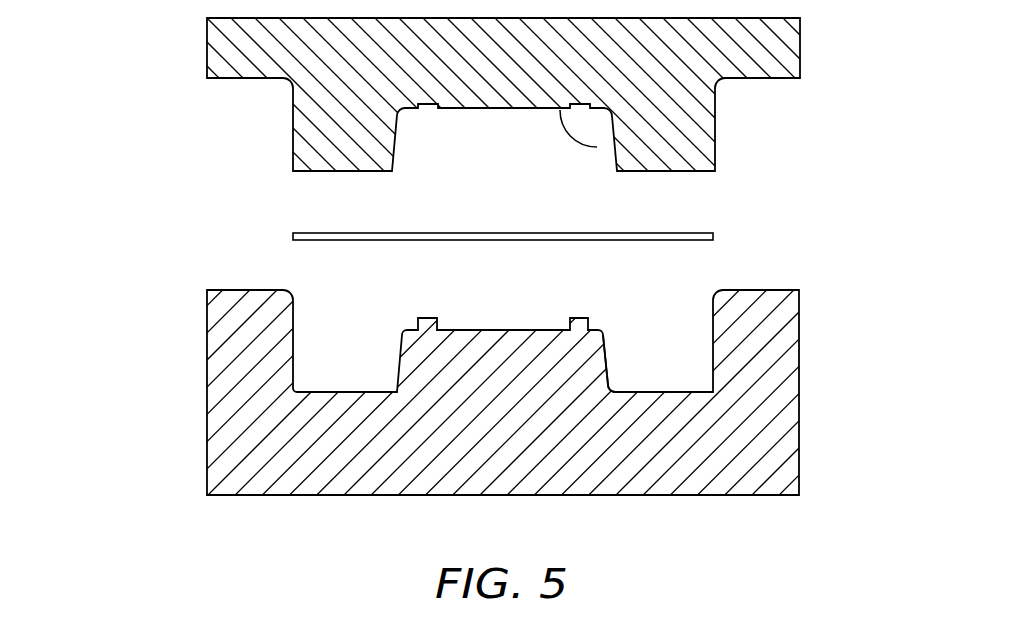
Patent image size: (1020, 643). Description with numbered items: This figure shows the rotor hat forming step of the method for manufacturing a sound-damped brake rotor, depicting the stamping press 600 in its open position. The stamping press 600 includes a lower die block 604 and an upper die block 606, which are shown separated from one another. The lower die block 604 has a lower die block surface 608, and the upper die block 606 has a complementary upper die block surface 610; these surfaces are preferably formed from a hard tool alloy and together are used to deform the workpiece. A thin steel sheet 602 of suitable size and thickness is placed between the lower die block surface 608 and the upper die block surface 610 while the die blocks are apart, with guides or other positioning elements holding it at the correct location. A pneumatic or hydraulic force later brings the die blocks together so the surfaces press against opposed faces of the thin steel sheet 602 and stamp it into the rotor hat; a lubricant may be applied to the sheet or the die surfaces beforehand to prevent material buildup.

The stamping press 600 is at (182, 200).
The thin steel sheet 602 is at (693, 233).
The lower die block 604 is at (768, 430).
The upper die block 606 is at (772, 50).
The lower die block surface 608 is at (603, 355).
The upper die block surface 610 is at (597, 147).